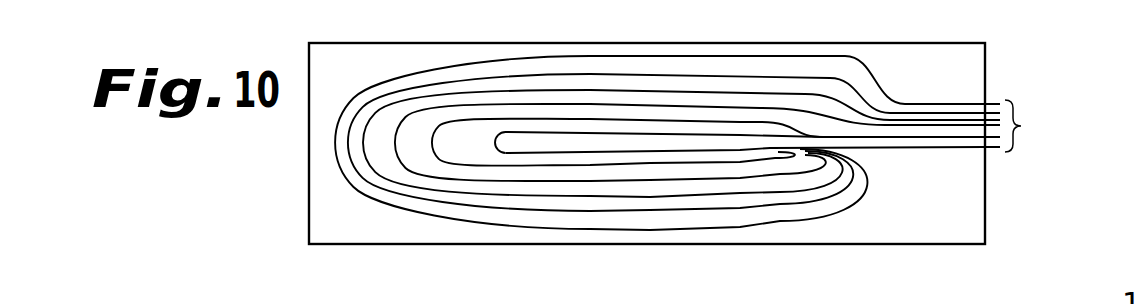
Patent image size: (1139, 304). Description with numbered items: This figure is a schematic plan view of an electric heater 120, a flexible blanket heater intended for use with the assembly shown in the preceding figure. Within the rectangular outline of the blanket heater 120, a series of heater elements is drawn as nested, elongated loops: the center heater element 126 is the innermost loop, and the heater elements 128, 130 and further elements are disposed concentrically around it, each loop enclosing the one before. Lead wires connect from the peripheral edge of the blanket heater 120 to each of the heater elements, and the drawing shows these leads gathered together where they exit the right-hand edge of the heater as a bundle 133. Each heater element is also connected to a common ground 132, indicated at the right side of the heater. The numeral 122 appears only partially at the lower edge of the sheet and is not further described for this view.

The heater 120 is at (956, 217).
The center heater element 126 is at (523, 157).
The heater element 128 is at (455, 158).
The heater element 130 is at (397, 155).
The common ground 132 is at (958, 152).
The fiber bundle 133 is at (1032, 124).
The fiber 122 is at (942, 294).